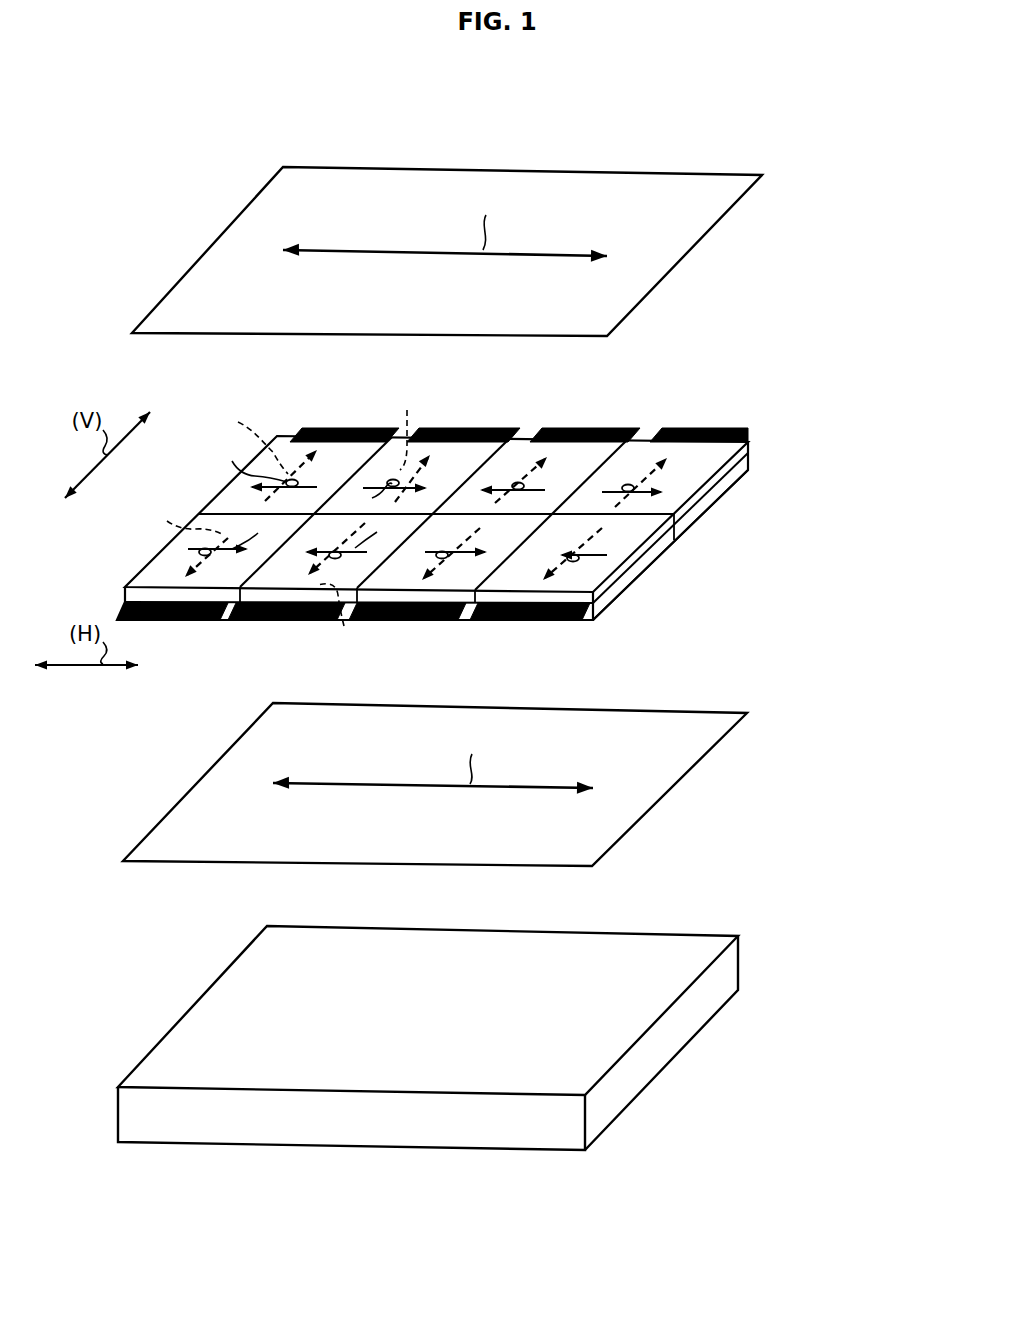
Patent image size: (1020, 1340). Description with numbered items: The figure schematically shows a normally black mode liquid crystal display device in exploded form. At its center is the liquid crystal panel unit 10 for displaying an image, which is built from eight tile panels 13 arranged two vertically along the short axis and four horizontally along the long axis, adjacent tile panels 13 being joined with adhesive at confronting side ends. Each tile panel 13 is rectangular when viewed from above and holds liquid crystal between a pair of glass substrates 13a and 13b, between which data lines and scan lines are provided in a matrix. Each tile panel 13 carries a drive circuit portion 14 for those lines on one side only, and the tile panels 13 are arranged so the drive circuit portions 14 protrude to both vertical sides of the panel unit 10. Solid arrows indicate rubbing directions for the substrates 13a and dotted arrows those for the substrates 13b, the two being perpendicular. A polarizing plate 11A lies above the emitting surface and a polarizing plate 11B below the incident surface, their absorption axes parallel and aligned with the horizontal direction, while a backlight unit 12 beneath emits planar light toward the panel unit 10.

The liquid crystal panel unit 10 is at (212, 487).
The polarizing plate 11A is at (232, 247).
The polarizing plate 11B is at (225, 778).
The backlight unit 12 is at (215, 1016).
The tile panel 13 is at (160, 573).
The substrate 13a is at (743, 457).
The substrate 13b is at (737, 479).
The drive circuit portion 14 is at (563, 423).